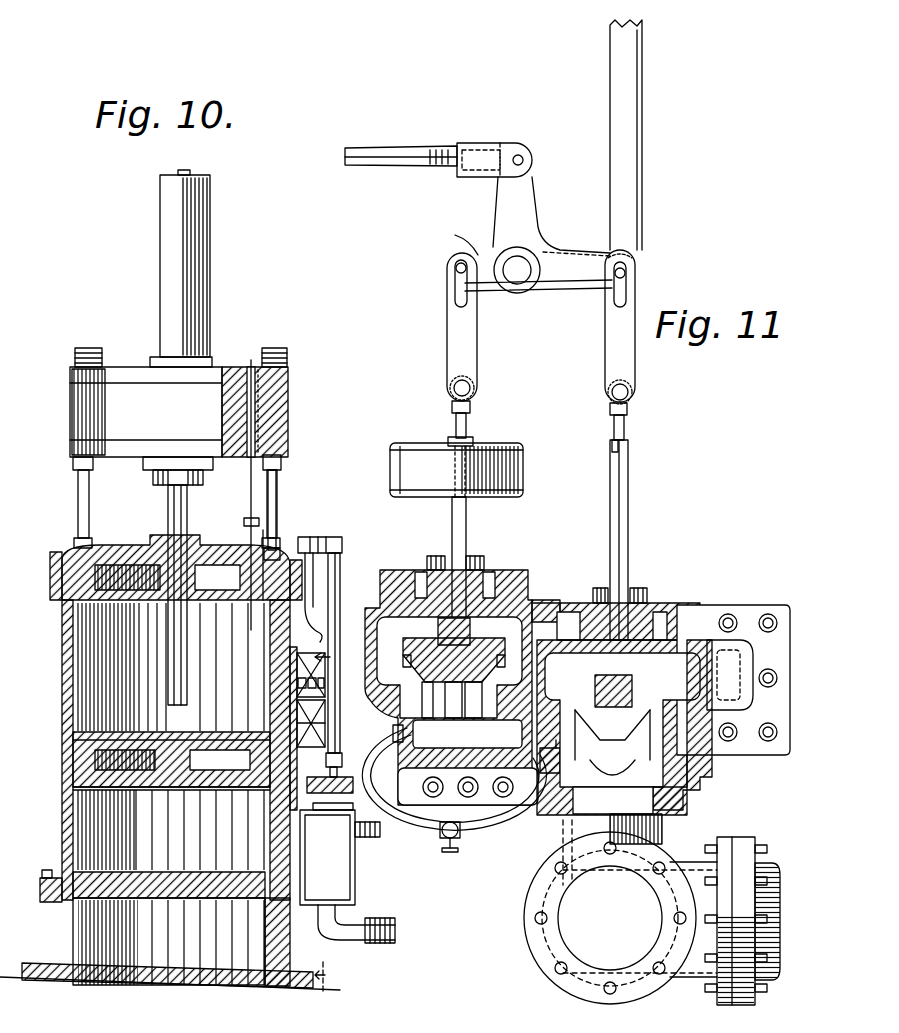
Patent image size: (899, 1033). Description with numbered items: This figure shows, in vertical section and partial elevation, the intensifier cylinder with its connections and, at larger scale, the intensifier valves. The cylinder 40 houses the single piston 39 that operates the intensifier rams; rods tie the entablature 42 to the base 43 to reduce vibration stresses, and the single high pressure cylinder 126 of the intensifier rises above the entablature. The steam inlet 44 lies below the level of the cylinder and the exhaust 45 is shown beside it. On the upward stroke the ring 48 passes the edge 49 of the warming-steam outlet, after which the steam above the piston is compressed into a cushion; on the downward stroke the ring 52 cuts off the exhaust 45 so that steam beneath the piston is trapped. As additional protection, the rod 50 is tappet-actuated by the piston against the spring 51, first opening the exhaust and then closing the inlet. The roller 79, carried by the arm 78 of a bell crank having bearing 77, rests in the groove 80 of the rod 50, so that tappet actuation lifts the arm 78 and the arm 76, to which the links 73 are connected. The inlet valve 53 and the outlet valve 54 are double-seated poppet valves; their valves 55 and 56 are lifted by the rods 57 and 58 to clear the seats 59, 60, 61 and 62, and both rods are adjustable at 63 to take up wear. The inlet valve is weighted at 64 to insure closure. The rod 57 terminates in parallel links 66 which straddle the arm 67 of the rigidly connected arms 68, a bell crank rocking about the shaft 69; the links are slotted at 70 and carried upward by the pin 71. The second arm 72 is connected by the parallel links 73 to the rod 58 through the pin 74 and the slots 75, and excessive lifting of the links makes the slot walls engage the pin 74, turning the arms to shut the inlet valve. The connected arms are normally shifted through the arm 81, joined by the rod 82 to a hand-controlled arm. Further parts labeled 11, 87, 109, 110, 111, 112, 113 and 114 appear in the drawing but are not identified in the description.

In FIG. 10, the high pressure cylinder 126 is at (167, 288).
In FIG. 10, the spring 51 is at (290, 360).
In FIG. 10, the entablature 42 is at (115, 420).
In FIG. 10, the groove 80 is at (252, 516).
In FIG. 10, the roller 79 is at (244, 524).
In FIG. 10, the rod 50 is at (275, 530).
In FIG. 10, the arm 78 is at (270, 540).
In FIG. 10, the bearing 77 is at (310, 545).
In FIG. 10, the arm 76 is at (345, 545).
In FIG. 10, the parallel links 73 is at (340, 583).
In FIG. 11, the parallel links 73 is at (625, 365).
In FIG. 10, the edge 49 is at (300, 645).
In FIG. 10, the ring 48 is at (268, 732).
In FIG. 10, the cylinder 40 is at (62, 716).
In FIG. 10, the piston 39 is at (100, 790).
In FIG. 10, the ring 52 is at (240, 792).
In FIG. 10, the exhaust 45 is at (278, 826).
In FIG. 10, the base 43 is at (48, 918).
In FIG. 10, the steam inlet 44 is at (238, 920).
In FIG. 11, the steam inlet 44 is at (397, 845).
In FIG. 10, the section line 11 is at (341, 822).
In FIG. 11, the rod 82 is at (396, 158).
In FIG. 11, the boss 87 is at (445, 167).
In FIG. 11, the arm 81 is at (525, 195).
In FIG. 11, the system of rigidly connected arms 68 is at (576, 237).
In FIG. 11, the shaft 69 is at (520, 292).
In FIG. 11, the second arm 72 is at (572, 277).
In FIG. 11, the arm 67 is at (451, 239).
In FIG. 11, the parallel links 66 is at (455, 350).
In FIG. 11, the slots 70 is at (462, 300).
In FIG. 11, the pin 71 is at (455, 270).
In FIG. 11, the slots 75 is at (630, 300).
In FIG. 11, the pin 74 is at (630, 268).
In FIG. 11, the adjustment 63 is at (470, 420).
In FIG. 11, the weight 64 is at (500, 480).
In FIG. 11, the rod 57 is at (450, 533).
In FIG. 11, the rod 58 is at (622, 522).
In FIG. 11, the inlet valve 53 is at (448, 674).
In FIG. 11, the seat 60 is at (425, 645).
In FIG. 11, the valve 55 is at (510, 658).
In FIG. 11, the seat 59 is at (395, 668).
In FIG. 11, the inlet flange 111 is at (495, 745).
In FIG. 11, the pipe 109 is at (393, 738).
In FIG. 11, the pipe 110 is at (391, 782).
In FIG. 11, the valve 114 is at (460, 838).
In FIG. 11, the fitting 113 is at (546, 800).
In FIG. 11, the seat 61 is at (556, 742).
In FIG. 11, the outlet valve 54 is at (661, 691).
In FIG. 11, the seat 62 is at (582, 692).
In FIG. 11, the valve 56 is at (656, 705).
In FIG. 11, the exhaust outlet 112 is at (700, 782).